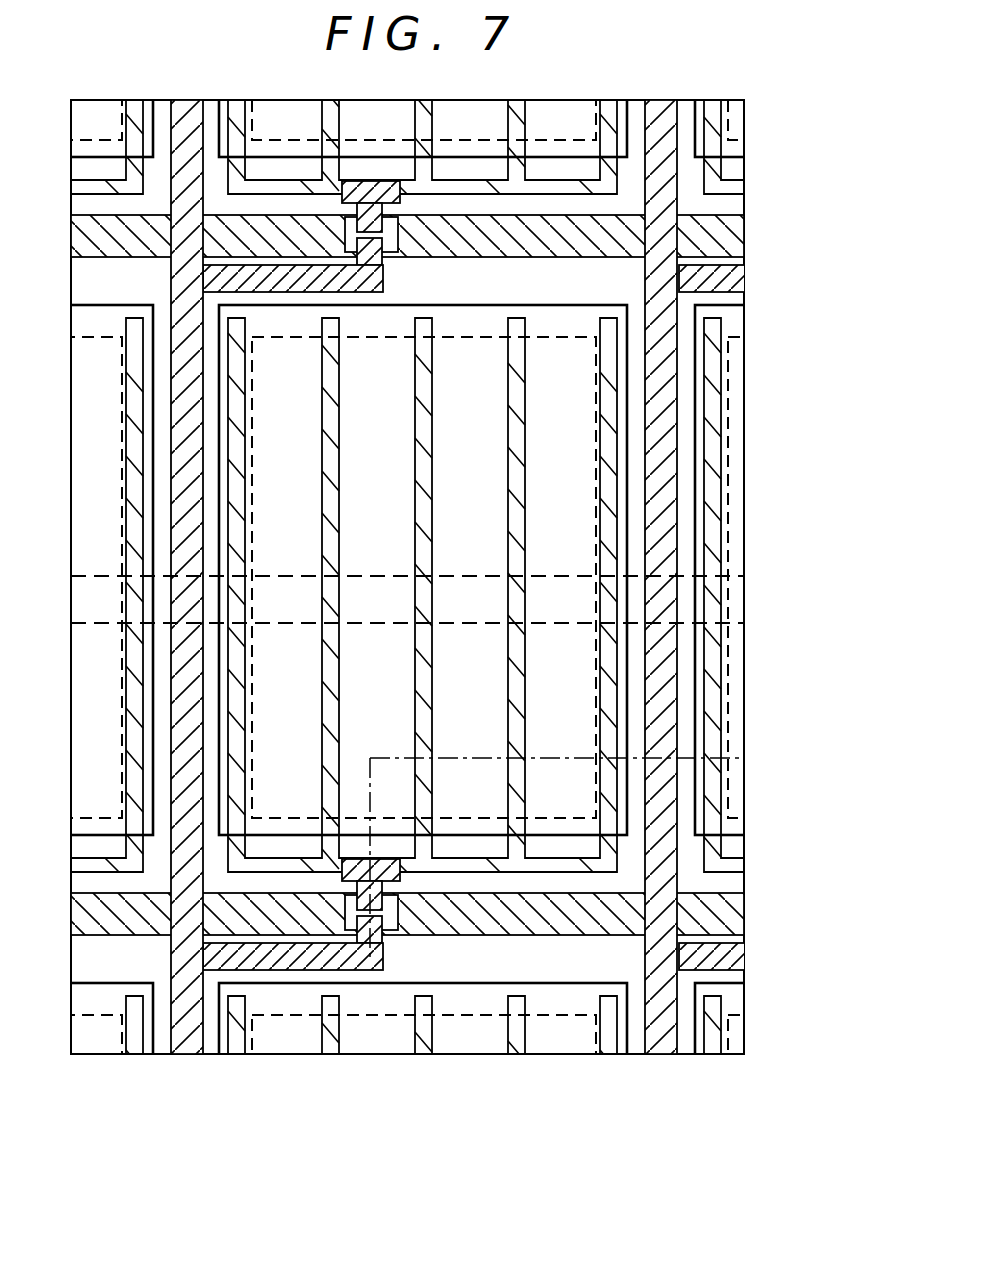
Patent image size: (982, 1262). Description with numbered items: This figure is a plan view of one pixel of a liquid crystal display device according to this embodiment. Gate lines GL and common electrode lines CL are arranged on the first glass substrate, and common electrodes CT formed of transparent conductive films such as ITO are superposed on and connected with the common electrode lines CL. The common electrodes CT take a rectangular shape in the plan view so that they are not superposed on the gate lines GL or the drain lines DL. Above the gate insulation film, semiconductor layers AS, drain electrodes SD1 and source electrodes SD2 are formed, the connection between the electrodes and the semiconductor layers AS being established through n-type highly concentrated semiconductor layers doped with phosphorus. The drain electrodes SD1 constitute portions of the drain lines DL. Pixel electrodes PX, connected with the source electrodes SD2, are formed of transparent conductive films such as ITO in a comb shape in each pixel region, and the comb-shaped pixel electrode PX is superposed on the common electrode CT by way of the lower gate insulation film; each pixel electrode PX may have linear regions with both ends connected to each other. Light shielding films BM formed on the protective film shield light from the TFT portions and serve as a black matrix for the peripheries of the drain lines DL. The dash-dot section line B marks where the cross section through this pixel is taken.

The gate line GL is at (742, 241).
The drain line DL is at (188, 1055).
The semiconductor layer AS is at (392, 240).
The common electrode CT is at (465, 308).
The pixel electrode PX is at (241, 455).
The light shielding film BM is at (252, 676).
The drain electrode SD1 is at (383, 937).
The source electrode SD2 is at (380, 858).
The common electrode line CL is at (747, 576).
The section line B–B' B is at (370, 977).